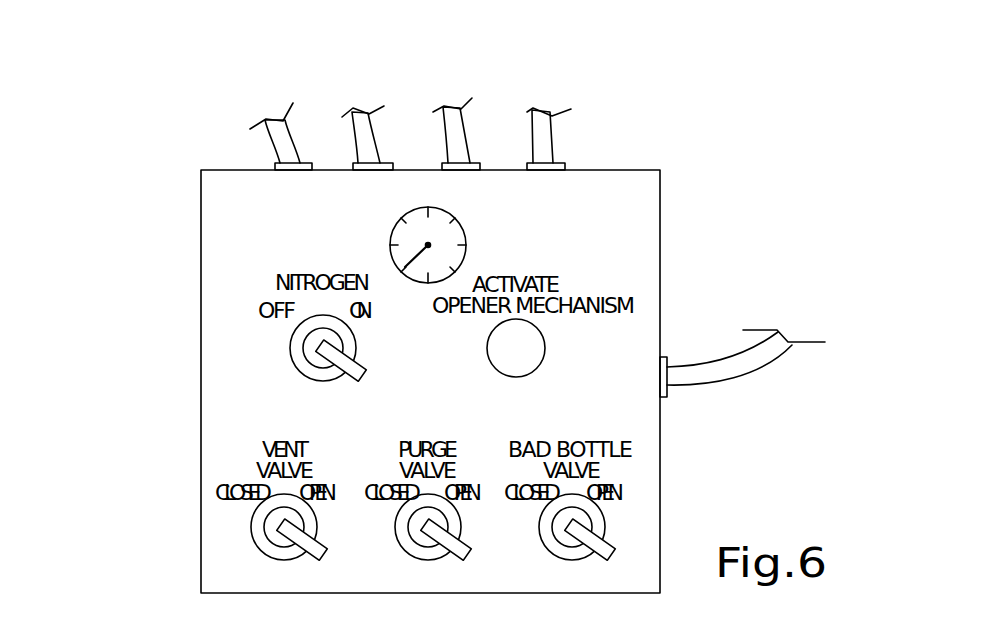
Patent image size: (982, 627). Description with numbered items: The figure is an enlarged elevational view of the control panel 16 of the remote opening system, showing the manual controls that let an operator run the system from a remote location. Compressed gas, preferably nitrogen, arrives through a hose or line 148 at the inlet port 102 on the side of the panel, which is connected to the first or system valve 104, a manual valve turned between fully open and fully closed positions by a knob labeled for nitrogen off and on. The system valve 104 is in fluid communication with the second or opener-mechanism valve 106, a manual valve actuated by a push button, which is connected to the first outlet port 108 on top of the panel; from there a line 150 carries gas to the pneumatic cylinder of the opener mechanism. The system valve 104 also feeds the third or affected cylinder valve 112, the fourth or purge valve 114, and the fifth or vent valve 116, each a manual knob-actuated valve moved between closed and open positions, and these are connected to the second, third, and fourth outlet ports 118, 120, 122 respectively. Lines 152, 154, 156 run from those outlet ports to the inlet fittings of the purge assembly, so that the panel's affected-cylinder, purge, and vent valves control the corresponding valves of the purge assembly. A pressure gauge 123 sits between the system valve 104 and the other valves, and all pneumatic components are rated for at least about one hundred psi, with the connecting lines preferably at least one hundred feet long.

The control panel 16 is at (108, 284).
The inlet port 102 is at (667, 397).
The system valve 104 is at (293, 362).
The opener-mechanism valve 106 is at (545, 350).
The first outlet port 108 is at (277, 168).
The affected cylinder valve 112 is at (565, 560).
The purge valve 114 is at (413, 560).
The vent valve 116 is at (254, 538).
The second outlet port 118 is at (563, 166).
The third outlet port 120 is at (482, 167).
The fourth outlet port 122 is at (393, 168).
The pressure gauge 123 is at (466, 235).
The hose or line 148 is at (747, 375).
The hose or line 150 is at (272, 140).
The hose or line 152 is at (553, 128).
The hose or line 154 is at (467, 128).
The hose or line 156 is at (378, 133).